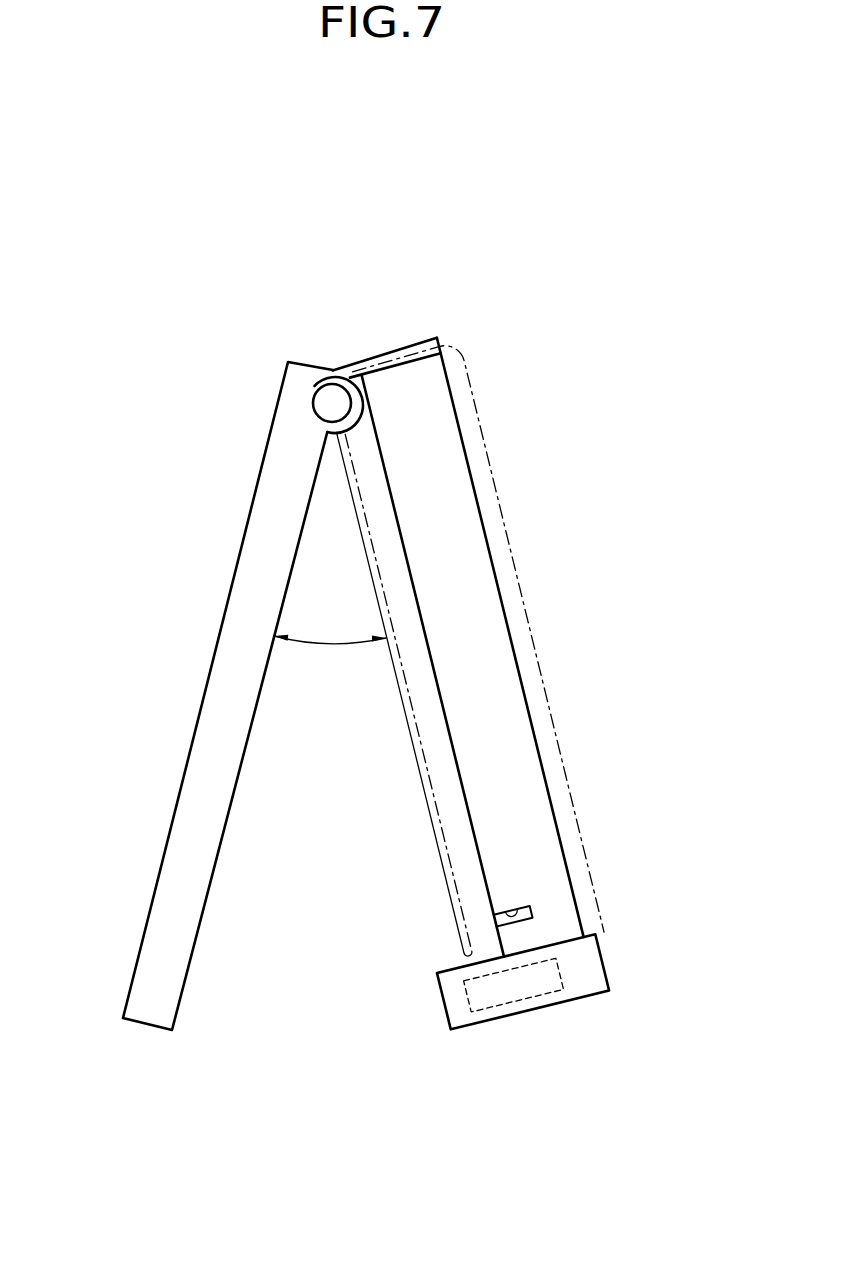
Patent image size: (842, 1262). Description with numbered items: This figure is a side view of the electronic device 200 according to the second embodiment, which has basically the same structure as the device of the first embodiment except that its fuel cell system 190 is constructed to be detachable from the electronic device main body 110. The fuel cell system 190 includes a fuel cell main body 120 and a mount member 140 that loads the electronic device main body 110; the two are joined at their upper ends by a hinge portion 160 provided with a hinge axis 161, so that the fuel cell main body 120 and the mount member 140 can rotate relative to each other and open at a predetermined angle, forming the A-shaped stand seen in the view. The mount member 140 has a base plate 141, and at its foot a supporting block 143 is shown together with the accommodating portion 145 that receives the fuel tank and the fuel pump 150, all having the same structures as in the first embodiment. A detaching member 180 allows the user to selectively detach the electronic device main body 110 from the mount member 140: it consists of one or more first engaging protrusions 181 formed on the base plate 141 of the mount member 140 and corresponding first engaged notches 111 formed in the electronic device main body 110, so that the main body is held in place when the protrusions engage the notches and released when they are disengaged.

The electronic device 200 is at (321, 223).
The electronic device main body 110 is at (527, 650).
The first engaged notches 111 is at (522, 905).
The fuel cell main body 120 is at (174, 691).
The mount member 140 is at (521, 659).
The base plate 141 is at (440, 815).
The supporting block 143 is at (498, 1021).
The accommodating portion 145 is at (437, 506).
The fuel pump 150 is at (455, 1004).
The hinge portion 160 is at (264, 350).
The hinge axis 161 is at (332, 403).
The detaching member 180 is at (551, 908).
The first engaging protrusions 181 is at (522, 905).
The fuel cell system 190 is at (290, 1011).